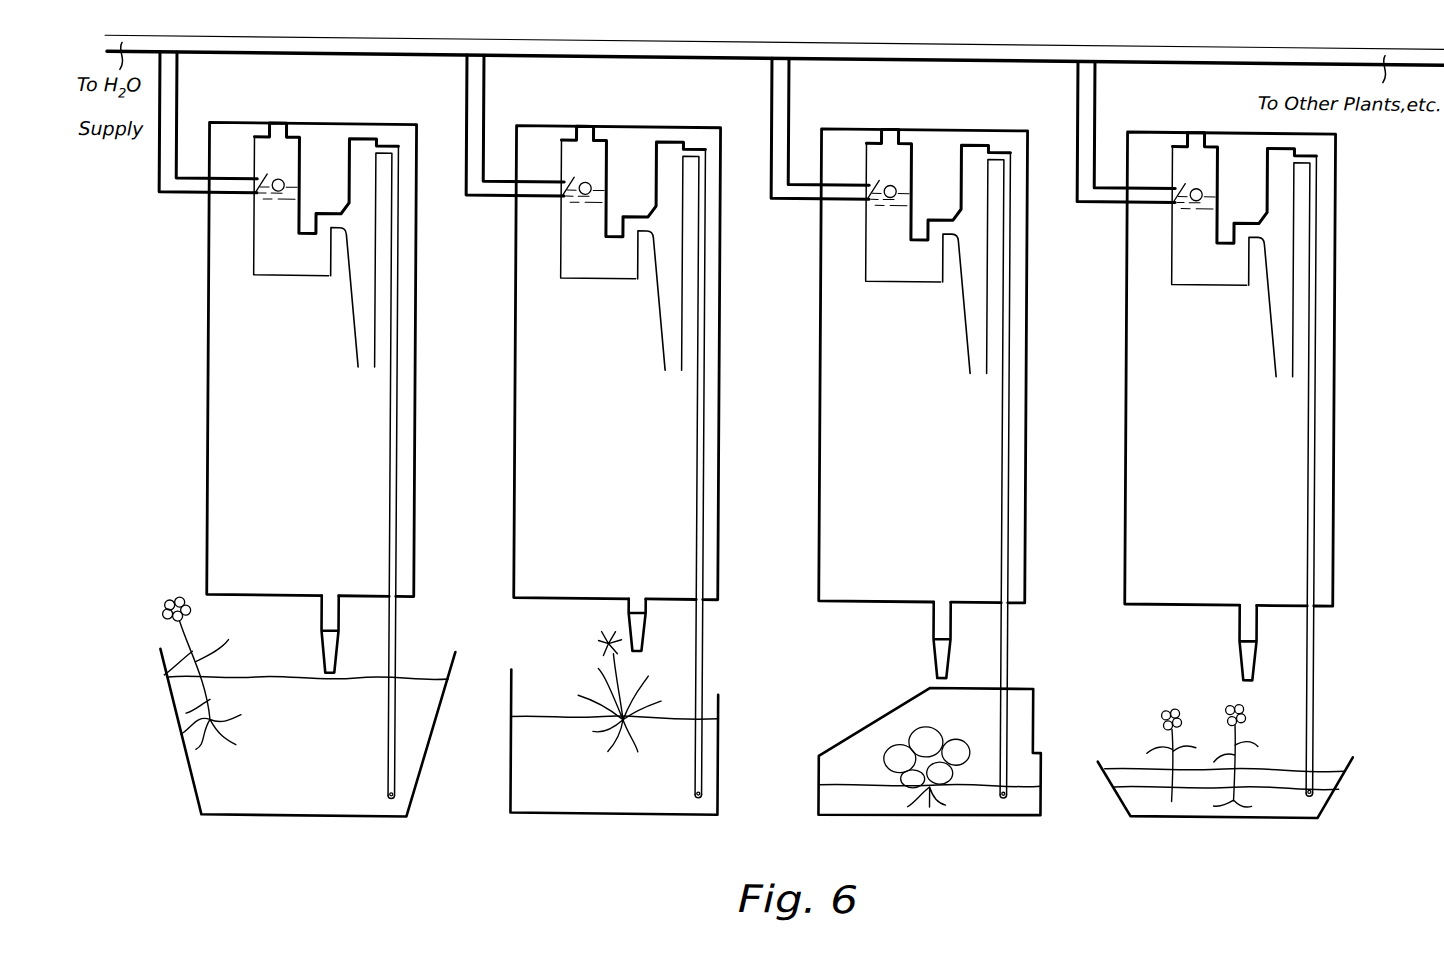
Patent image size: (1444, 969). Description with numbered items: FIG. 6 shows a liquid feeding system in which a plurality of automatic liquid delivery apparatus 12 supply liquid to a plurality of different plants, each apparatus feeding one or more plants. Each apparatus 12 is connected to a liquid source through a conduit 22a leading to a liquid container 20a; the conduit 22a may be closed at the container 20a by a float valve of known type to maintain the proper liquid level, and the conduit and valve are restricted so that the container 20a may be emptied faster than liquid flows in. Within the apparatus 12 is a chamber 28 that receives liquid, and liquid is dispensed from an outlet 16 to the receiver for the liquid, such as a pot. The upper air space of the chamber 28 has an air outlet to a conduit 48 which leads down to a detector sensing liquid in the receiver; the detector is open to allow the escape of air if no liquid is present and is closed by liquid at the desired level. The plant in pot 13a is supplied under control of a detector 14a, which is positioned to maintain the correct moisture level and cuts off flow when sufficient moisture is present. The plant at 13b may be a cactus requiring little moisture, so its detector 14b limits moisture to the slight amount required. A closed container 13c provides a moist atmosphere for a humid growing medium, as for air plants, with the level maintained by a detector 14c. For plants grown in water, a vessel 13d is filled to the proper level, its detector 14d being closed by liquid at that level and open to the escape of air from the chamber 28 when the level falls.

The automatic liquid delivery apparatus 12 is at (210, 271).
The pot 13a is at (335, 815).
The plant 13b is at (614, 742).
The closed container 13c is at (929, 770).
The vessel 13d is at (1225, 778).
The detector 14a is at (390, 796).
The detector 14b is at (730, 789).
The detector 14c is at (993, 821).
The detector 14d is at (1348, 793).
The dispensing outlet 16 is at (342, 600).
The liquid container 20a is at (278, 262).
The conduit 22a is at (176, 90).
The chamber 28 is at (368, 287).
The conduit 48 is at (396, 253).